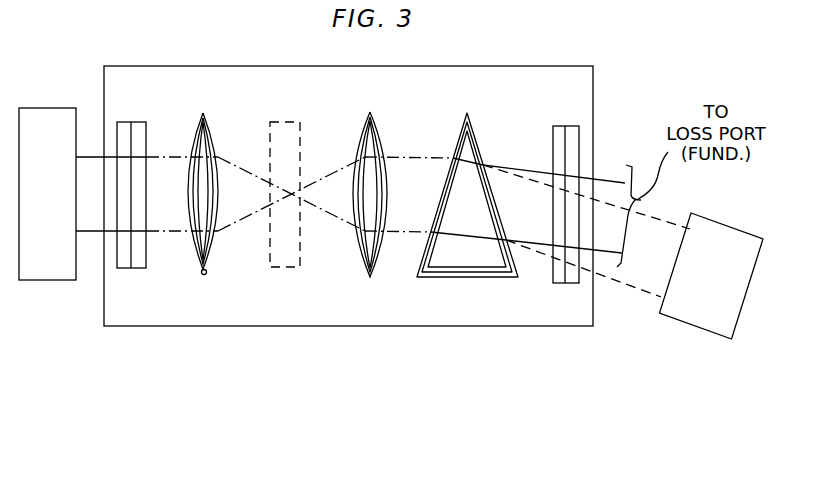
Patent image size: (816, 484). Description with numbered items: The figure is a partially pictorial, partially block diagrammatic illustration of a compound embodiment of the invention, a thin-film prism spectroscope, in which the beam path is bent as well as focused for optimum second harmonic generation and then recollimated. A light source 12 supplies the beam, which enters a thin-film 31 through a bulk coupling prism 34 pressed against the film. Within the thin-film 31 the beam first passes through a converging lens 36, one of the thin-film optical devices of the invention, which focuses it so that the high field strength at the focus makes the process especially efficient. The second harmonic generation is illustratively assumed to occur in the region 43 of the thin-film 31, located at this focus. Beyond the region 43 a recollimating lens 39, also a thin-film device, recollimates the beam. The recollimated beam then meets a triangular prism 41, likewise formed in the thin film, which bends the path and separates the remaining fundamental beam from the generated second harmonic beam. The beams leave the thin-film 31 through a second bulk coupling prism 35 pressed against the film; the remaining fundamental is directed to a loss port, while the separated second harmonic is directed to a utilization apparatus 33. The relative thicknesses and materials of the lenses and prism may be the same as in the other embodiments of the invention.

The thin-film 31 is at (186, 73).
The light source 12 is at (38, 280).
The bulk coupling prism 34 is at (123, 268).
The converging lens 36 is at (201, 275).
The second harmonic generation region 43 is at (283, 268).
The recollimating lens 39 is at (373, 118).
The triangular prism 41 is at (470, 122).
The bulk coupling prism 35 is at (570, 126).
The utilization apparatus for second harmonic 33 is at (697, 304).